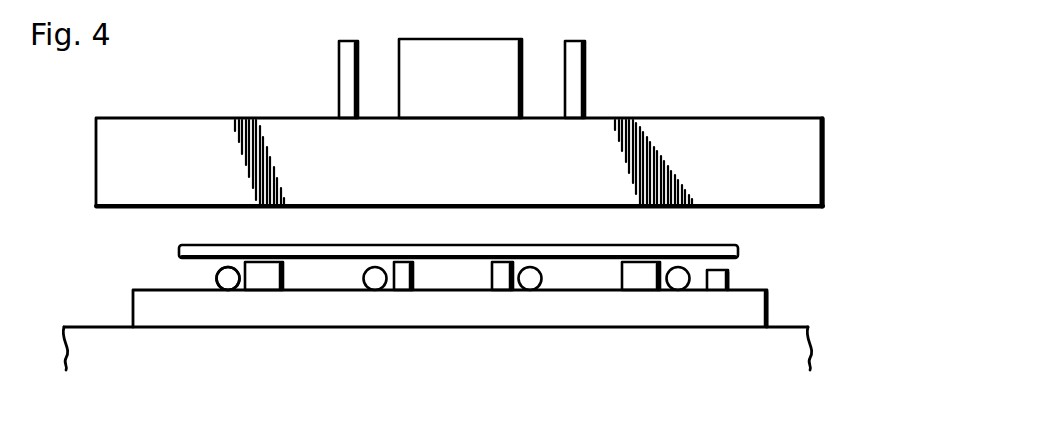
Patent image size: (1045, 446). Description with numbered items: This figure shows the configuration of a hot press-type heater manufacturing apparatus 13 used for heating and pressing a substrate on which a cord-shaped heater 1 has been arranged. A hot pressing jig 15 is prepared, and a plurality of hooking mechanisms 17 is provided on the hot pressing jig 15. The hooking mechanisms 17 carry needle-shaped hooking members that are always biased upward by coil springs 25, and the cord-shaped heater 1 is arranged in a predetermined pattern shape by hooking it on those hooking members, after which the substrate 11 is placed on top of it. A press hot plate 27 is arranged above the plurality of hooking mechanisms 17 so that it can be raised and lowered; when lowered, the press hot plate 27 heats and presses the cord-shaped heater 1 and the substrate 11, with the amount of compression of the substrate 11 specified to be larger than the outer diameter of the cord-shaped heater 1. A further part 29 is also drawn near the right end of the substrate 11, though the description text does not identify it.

The cord-shaped heater 1 is at (222, 277).
The substrate 11 is at (735, 252).
The hot press-type heater manufacturing apparatus 13 is at (655, 115).
The hot pressing jig 15 is at (160, 313).
The hooking mechanisms 17 is at (253, 281).
The coil springs 25 is at (272, 285).
The press hot plate 27 is at (818, 125).
The stopper 29 is at (718, 280).